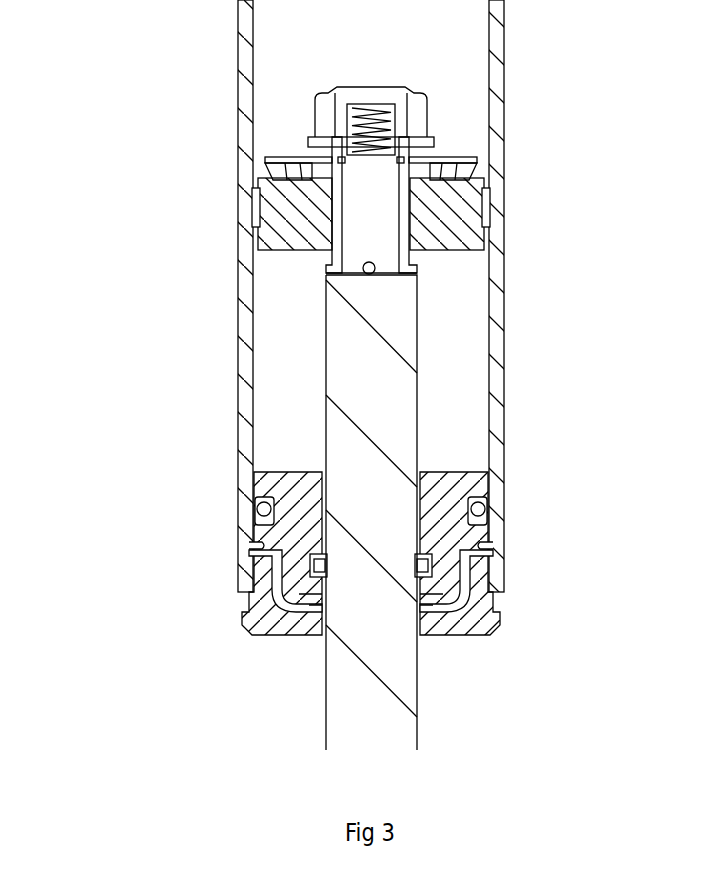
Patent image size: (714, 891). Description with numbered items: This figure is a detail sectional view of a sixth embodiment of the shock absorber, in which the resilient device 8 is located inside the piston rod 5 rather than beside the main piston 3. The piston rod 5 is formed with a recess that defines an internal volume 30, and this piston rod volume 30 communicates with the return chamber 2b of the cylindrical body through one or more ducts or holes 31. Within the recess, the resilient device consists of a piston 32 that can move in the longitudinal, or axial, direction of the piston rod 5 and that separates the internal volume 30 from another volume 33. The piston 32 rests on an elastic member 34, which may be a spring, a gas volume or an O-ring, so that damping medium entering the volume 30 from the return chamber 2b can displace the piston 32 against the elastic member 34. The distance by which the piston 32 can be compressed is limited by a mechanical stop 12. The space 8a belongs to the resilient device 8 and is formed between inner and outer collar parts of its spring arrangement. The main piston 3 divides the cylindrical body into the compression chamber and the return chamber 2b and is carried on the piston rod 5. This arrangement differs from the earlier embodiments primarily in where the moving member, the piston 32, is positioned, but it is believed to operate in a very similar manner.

The return chamber 2b is at (442, 448).
The main piston 3 is at (418, 203).
The piston rod 5 is at (383, 338).
The resilient device 8 is at (400, 117).
The space 8a is at (402, 138).
The mechanical stop 12 is at (266, 161).
The internal volume 30 is at (365, 205).
The ducts or holes 31 is at (328, 268).
The piston 32 is at (330, 177).
The another volume 33 is at (345, 143).
The elastic member 34 is at (343, 113).